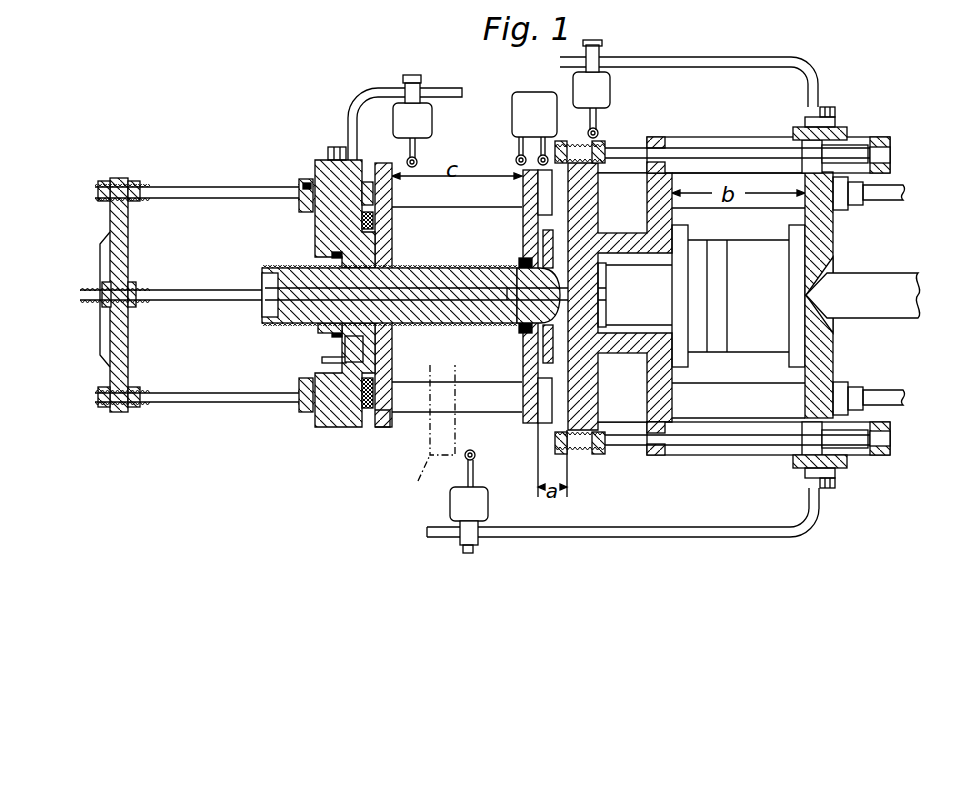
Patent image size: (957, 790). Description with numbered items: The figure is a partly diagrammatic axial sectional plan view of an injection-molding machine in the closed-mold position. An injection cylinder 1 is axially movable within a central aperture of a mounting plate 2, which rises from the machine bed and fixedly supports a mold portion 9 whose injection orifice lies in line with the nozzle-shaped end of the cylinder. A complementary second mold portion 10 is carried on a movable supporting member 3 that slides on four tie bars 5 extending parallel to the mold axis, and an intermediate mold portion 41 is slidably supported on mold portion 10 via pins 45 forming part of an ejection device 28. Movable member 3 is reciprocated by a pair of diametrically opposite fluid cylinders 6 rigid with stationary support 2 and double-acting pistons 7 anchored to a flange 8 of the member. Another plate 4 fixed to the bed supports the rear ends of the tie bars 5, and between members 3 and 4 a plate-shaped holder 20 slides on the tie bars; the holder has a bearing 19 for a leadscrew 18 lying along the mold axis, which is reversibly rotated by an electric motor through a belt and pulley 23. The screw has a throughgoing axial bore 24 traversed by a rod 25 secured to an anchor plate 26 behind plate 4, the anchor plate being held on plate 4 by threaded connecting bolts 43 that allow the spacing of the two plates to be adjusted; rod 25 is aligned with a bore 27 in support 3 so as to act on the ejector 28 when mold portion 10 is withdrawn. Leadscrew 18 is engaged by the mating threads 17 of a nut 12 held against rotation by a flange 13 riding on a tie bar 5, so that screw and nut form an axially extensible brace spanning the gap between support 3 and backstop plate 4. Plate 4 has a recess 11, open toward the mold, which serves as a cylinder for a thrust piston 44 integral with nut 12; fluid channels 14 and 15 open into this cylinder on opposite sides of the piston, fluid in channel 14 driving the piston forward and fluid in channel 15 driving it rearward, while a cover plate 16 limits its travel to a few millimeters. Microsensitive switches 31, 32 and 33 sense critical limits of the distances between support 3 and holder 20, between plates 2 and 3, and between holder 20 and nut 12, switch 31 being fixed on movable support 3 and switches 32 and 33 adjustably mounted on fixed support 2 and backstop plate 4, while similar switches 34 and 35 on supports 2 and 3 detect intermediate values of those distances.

The injection cylinder 1 is at (906, 307).
The mounting plate 2 is at (819, 362).
The movable supporting member 3 is at (642, 425).
The plate 4 is at (335, 147).
The tie bars 5 is at (775, 400).
The fluid cylinders 6 is at (742, 448).
The pistons 7 is at (727, 442).
The flange 8 is at (640, 529).
The mold portion 9 is at (742, 332).
The second mold portion 10 is at (698, 337).
The recess 11 is at (352, 427).
The nut 12 is at (360, 338).
The flange 13 is at (386, 410).
The fluid channel 14 is at (325, 362).
The fluid channel 15 is at (326, 420).
The cover plate 16 is at (370, 405).
The mating threads 17 is at (335, 328).
The leadscrew 18 is at (470, 308).
The bearing 19 is at (522, 336).
The plate-shaped holder 20 is at (528, 408).
The pulley 23 is at (540, 222).
The axial bore 24 is at (522, 272).
The rod 25 is at (208, 300).
The anchor plate 26 is at (122, 412).
The bore 27 is at (585, 294).
The ejection device 28 is at (601, 262).
The microsensitive switch 31 is at (548, 153).
The microsensitive switch 32 is at (598, 121).
The microsensitive switch 33 is at (414, 168).
The switch 34 is at (476, 460).
The switch 35 is at (540, 150).
The intermediate mold portion 41 is at (718, 250).
The threaded connecting bolts 43 is at (195, 187).
The thrust piston 44 is at (357, 223).
The pins 45 is at (658, 283).